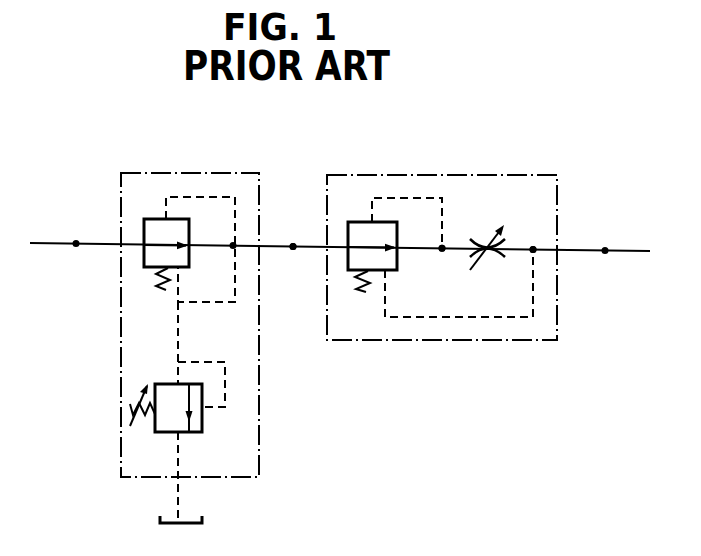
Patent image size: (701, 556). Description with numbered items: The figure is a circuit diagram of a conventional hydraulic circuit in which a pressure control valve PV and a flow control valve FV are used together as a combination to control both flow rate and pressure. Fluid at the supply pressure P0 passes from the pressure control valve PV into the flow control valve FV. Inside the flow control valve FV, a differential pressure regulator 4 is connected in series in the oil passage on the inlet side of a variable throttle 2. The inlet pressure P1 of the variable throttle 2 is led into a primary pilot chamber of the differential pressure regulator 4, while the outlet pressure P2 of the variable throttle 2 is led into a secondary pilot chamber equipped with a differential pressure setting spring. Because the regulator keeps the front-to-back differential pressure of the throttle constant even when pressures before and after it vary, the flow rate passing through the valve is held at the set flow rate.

The pressure control valve PV is at (173, 172).
The flow control valve FV is at (386, 175).
The differential pressure regulator 4 is at (360, 222).
The variable throttle 2 is at (485, 238).
The supply pressure P0 is at (295, 231).
The inlet pressure of the variable throttle P1 is at (443, 265).
The outlet pressure of the variable throttle P2 is at (536, 235).